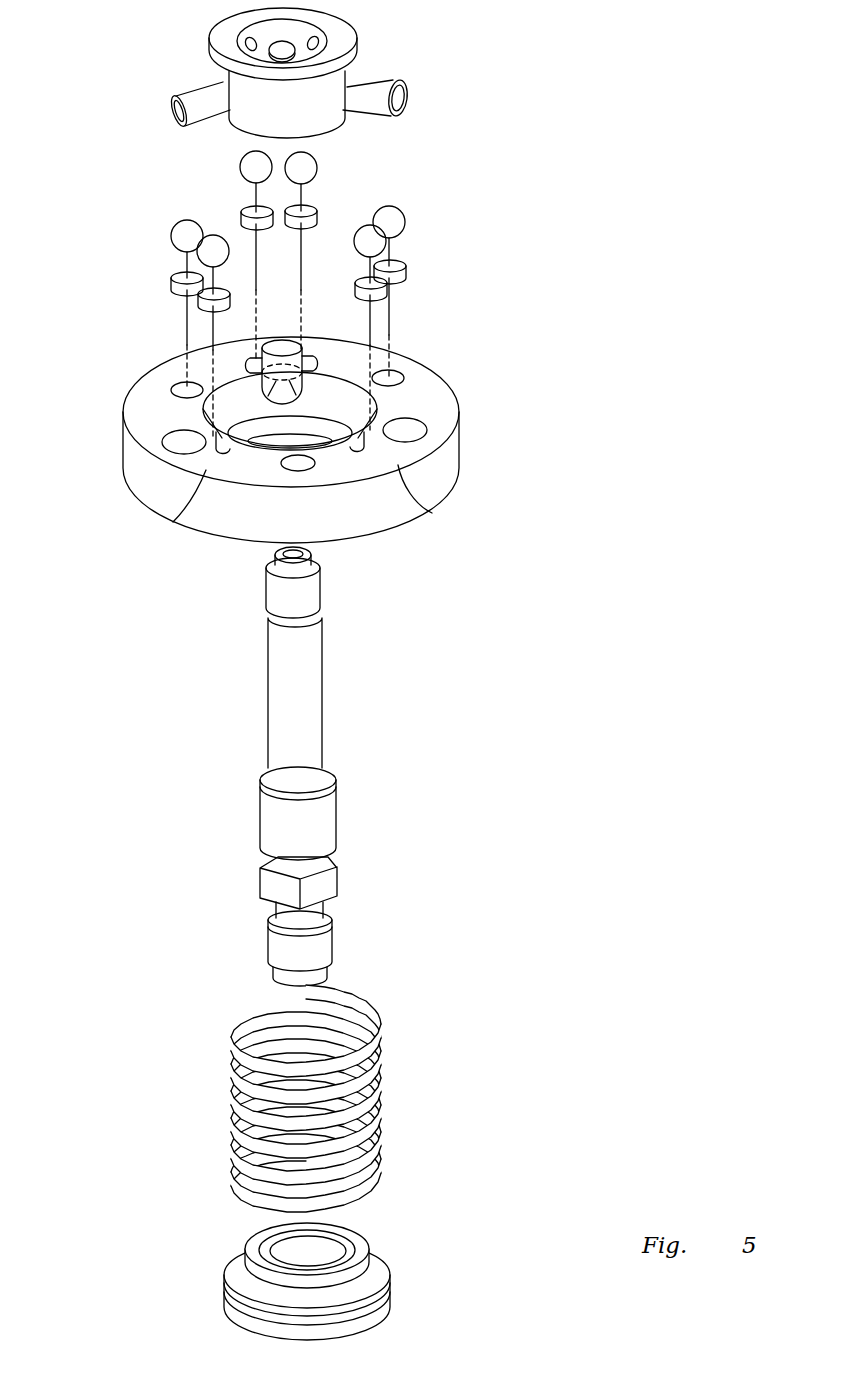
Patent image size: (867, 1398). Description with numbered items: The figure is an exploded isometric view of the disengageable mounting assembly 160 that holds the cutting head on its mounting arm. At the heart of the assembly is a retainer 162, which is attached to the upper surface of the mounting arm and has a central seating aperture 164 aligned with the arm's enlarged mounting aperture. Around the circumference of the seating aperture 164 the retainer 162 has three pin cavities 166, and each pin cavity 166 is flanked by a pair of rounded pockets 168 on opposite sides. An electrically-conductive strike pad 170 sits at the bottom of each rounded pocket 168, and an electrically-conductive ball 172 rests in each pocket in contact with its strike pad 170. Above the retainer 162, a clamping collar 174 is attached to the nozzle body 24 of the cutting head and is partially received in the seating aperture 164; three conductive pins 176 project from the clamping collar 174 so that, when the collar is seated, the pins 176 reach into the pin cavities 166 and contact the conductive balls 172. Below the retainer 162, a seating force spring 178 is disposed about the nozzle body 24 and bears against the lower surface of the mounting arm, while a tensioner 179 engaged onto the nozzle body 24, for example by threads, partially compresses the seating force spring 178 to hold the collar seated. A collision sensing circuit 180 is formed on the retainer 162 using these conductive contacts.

The nozzle body 24 is at (324, 690).
The disengageable mounting assembly 160 is at (336, 497).
The retainer 162 is at (460, 433).
The seating aperture 164 is at (344, 393).
The pin cavities 166 is at (282, 341).
The rounded pockets 168 is at (250, 358).
The electrically-conductive strike pad 170 is at (242, 216).
The electrically-conductive ball 172 is at (241, 170).
The clamping collar 174 is at (360, 44).
The conductive pins 176 is at (406, 81).
The seating force spring 178 is at (386, 1036).
The tensioner 179 is at (393, 1272).
The collision sensing circuit 180 is at (286, 643).